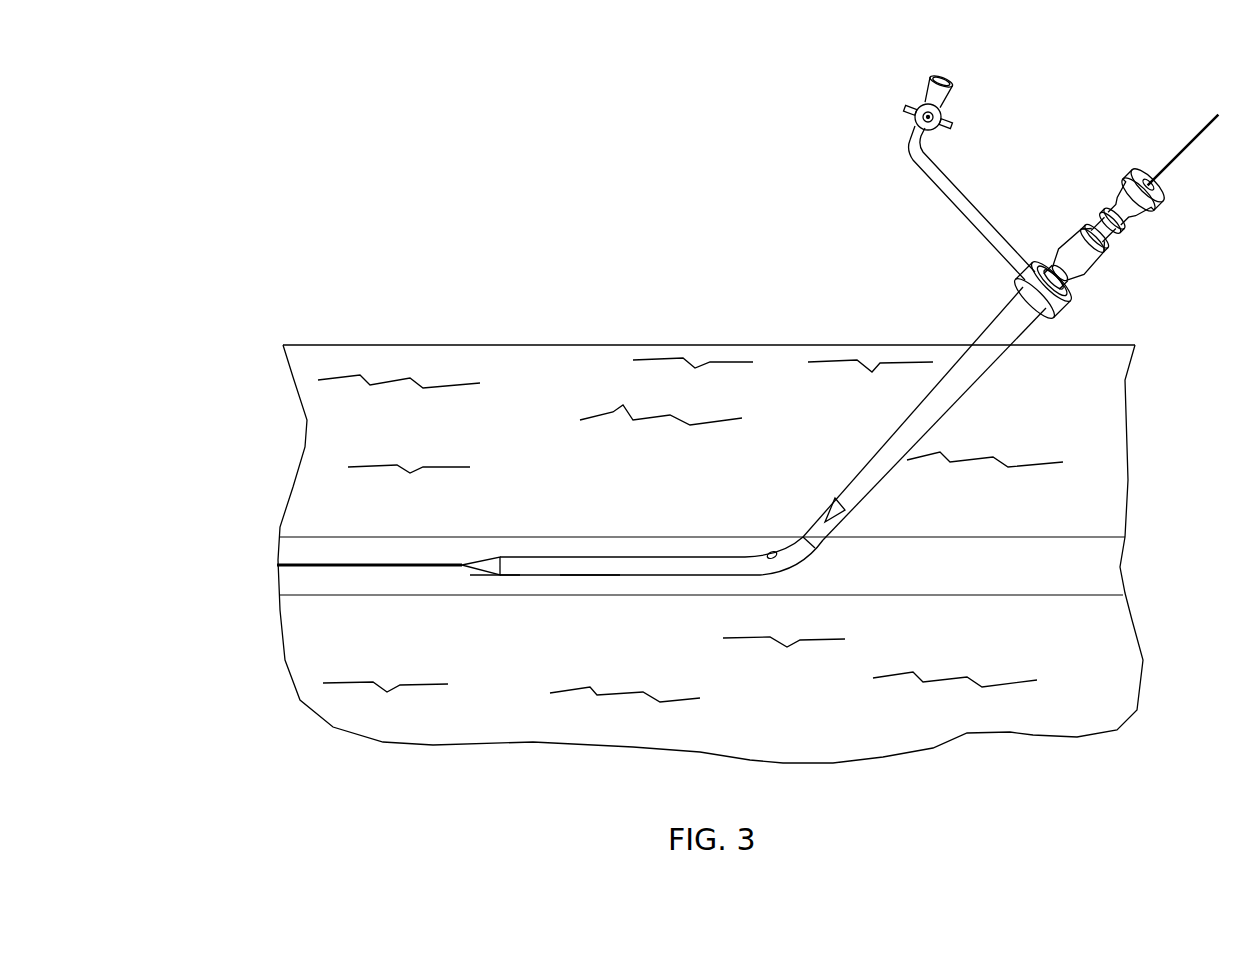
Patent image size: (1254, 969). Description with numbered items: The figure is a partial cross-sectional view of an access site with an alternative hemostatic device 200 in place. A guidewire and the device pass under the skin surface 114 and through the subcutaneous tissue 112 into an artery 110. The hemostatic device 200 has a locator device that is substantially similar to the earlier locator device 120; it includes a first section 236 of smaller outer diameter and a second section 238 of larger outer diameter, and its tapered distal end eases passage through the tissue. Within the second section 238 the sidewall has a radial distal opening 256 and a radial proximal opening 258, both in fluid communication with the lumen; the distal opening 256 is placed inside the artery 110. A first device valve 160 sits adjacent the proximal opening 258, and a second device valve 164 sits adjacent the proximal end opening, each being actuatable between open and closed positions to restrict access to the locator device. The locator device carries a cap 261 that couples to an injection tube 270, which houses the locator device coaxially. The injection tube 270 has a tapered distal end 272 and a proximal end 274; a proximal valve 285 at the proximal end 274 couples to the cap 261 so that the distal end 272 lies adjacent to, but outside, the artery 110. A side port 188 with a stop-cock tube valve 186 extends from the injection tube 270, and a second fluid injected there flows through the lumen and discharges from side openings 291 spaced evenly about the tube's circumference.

The artery 110 is at (1114, 575).
The subcutaneous tissue 112 is at (623, 452).
The skin surface 114 is at (365, 344).
The locator device 120 is at (673, 592).
The first device valve 160 is at (1086, 248).
The second device valve 164 is at (1150, 210).
The tube valve 186 is at (962, 114).
The side port 188 is at (958, 86).
The hemostatic device 200 is at (1117, 91).
The first section 236 is at (479, 592).
The second section 238 is at (577, 592).
The distal opening 256 is at (773, 560).
The proximal opening 258 is at (1108, 243).
The cap 261 is at (1050, 276).
The injection tube 270 is at (902, 492).
The distal end 272 is at (822, 557).
The proximal end 274 is at (1080, 296).
The proximal valve 285 is at (1060, 312).
The side openings 291 is at (833, 498).